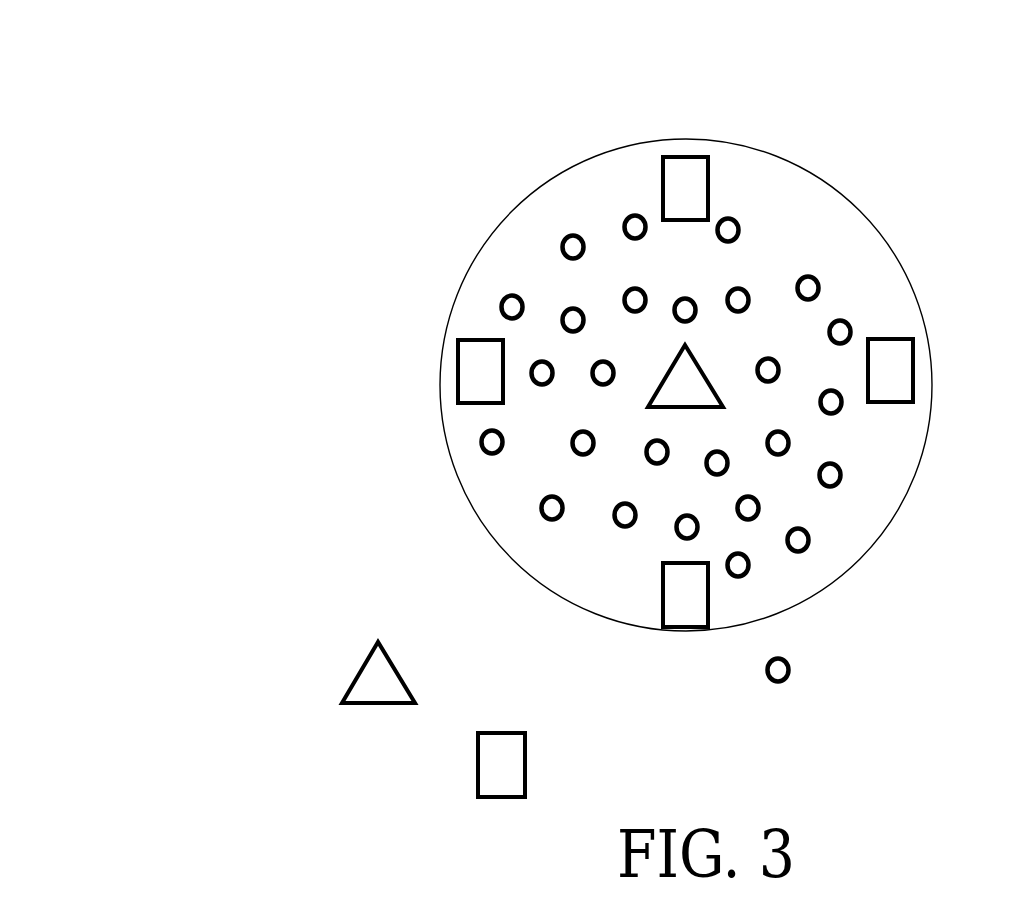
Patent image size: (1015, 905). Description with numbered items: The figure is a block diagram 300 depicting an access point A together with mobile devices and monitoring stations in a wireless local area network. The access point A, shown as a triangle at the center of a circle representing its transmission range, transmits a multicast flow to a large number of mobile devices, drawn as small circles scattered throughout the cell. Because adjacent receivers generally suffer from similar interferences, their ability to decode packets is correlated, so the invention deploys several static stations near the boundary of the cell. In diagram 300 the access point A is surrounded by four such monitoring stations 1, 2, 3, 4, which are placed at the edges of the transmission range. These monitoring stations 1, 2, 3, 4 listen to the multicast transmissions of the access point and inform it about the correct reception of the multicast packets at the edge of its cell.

The diagram 300 is at (236, 33).
The monitoring station 1 is at (685, 188).
The monitoring station 2 is at (480, 371).
The monitoring station 3 is at (890, 370).
The monitoring station 4 is at (685, 595).